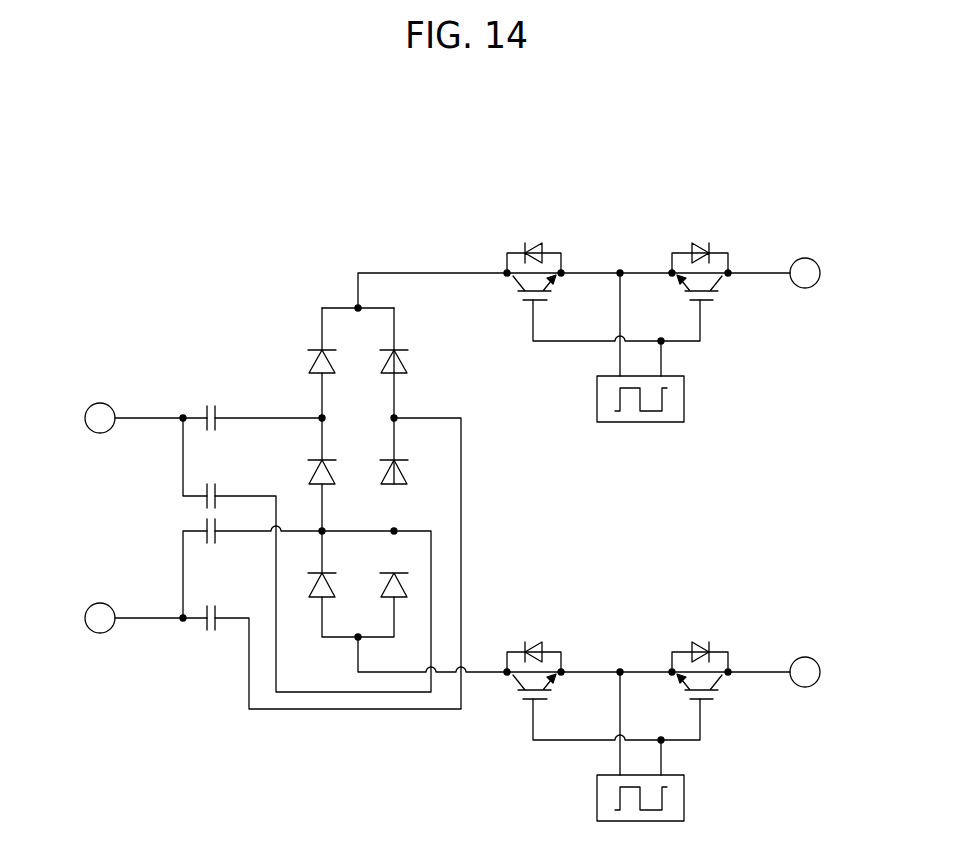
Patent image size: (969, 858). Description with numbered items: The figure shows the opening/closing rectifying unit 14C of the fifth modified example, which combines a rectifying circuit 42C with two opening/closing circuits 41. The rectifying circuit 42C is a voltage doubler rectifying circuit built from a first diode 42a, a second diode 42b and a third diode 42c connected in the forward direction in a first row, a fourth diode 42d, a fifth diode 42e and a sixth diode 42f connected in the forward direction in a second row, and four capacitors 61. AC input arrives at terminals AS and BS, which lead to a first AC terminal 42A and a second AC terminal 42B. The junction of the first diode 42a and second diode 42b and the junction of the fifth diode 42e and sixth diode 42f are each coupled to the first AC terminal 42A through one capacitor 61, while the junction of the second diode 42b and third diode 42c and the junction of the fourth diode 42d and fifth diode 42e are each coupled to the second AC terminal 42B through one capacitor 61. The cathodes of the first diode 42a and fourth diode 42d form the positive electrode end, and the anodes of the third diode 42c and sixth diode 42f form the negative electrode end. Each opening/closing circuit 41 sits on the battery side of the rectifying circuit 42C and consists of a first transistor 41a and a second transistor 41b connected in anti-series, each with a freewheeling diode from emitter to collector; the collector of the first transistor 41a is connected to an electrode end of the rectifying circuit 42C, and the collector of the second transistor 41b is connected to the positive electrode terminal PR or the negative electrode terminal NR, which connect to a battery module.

The opening/closing rectifying unit 14C is at (852, 238).
The opening/closing circuit 41 is at (640, 493).
The first transistor 41a is at (528, 301).
The second transistor 41b is at (707, 303).
The first AC terminal 42A is at (272, 545).
The second AC terminal 42B is at (180, 622).
The rectifying circuit 42C is at (359, 439).
The first diode 42a is at (318, 349).
The second diode 42b is at (318, 460).
The third diode 42c is at (324, 573).
The fourth diode 42d is at (397, 349).
The fifth diode 42e is at (397, 461).
The sixth diode 42f is at (397, 573).
The capacitor 61 is at (212, 493).
The A-phase supply terminal AS is at (85, 418).
The B-phase supply terminal BS is at (85, 618).
The positive electrode terminal PR is at (805, 258).
The negative electrode terminal NR is at (805, 657).